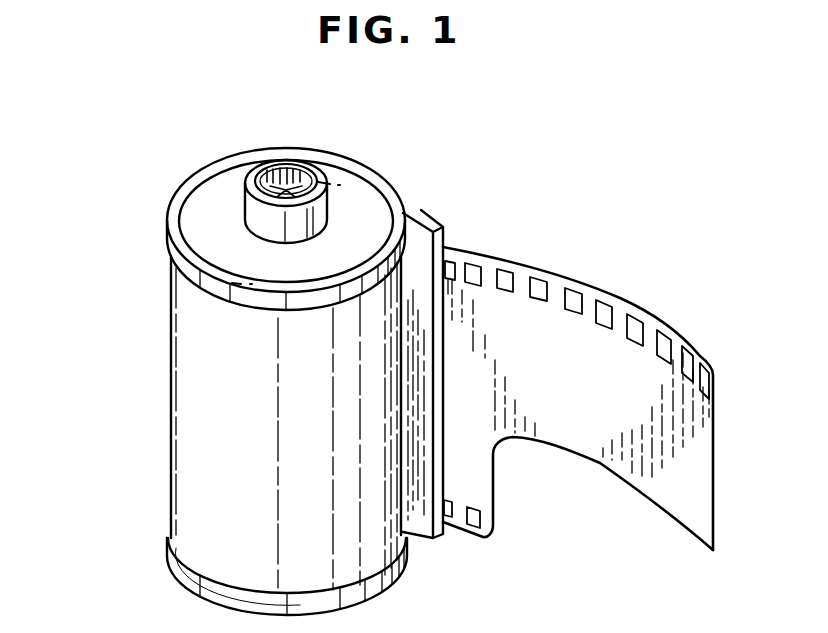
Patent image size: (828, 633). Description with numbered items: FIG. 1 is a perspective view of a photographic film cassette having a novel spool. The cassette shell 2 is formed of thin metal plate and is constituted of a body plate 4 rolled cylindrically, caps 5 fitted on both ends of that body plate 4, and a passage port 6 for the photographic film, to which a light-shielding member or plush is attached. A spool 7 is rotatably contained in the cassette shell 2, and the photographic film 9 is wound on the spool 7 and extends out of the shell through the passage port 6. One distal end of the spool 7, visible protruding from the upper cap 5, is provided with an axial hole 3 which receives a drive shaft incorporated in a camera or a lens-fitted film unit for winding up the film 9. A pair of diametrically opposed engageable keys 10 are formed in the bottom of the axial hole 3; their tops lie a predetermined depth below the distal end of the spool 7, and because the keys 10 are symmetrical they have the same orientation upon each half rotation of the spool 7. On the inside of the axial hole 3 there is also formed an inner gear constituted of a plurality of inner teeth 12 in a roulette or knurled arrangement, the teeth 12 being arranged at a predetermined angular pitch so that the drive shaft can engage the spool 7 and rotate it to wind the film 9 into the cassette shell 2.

The cassette shell 2 is at (78, 192).
The axial hole 3 is at (307, 172).
The body plate 4 is at (180, 450).
The caps 5 is at (167, 221).
The passage port 6 is at (450, 240).
The spool 7 is at (323, 213).
The photographic film 9 is at (587, 448).
The engageable keys 10 is at (273, 167).
The inner teeth 12 is at (290, 170).